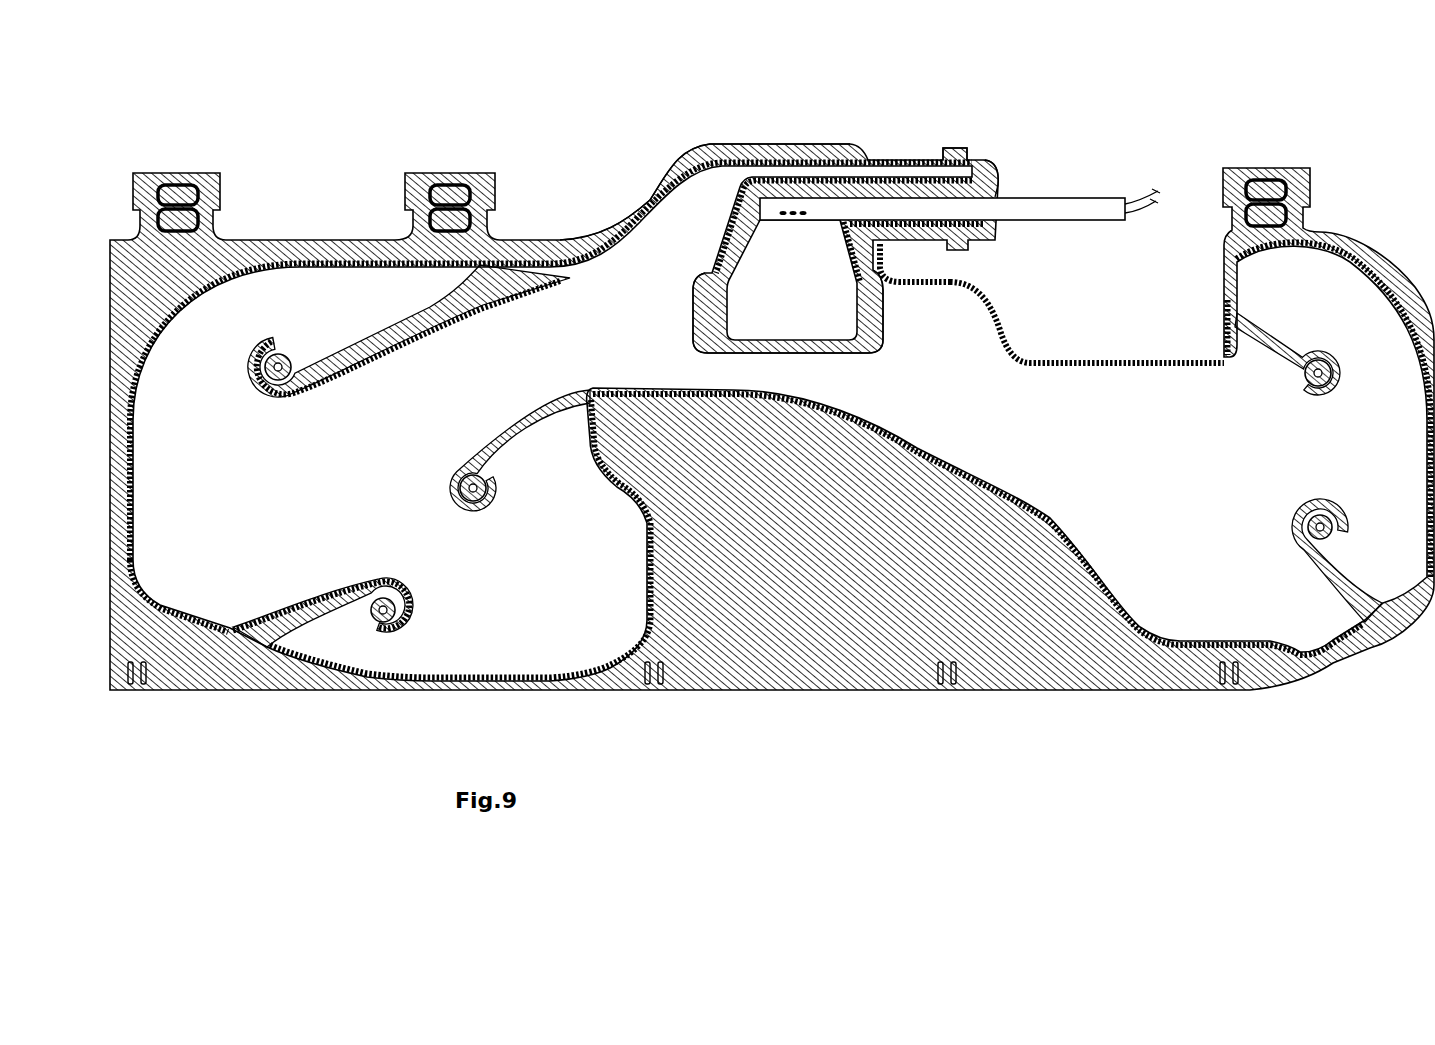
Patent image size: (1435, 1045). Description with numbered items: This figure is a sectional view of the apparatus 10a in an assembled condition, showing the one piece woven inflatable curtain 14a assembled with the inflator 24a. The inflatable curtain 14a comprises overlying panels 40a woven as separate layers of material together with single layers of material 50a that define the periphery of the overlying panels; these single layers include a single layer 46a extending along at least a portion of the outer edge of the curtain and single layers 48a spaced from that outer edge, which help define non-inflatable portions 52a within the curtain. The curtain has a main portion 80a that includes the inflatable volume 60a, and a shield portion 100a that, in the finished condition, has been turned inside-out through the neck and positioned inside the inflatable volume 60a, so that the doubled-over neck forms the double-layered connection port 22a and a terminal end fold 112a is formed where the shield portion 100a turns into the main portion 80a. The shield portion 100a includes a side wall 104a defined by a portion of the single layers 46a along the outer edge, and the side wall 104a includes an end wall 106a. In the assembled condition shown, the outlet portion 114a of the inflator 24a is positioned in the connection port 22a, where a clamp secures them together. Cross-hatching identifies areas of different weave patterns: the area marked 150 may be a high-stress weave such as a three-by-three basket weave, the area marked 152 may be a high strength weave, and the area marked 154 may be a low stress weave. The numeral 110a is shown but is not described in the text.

The apparatus 10a is at (772, 408).
The inflatable curtain 14a is at (1370, 165).
The side wall 104a is at (723, 217).
The outlet portion 114a is at (790, 202).
The terminal end fold 112a is at (990, 187).
The connection port 22a is at (993, 190).
The inflator 24a is at (1047, 210).
The inflatable volume 60a is at (387, 293).
The overlying panels 40a is at (293, 300).
The non-inflatable portions 52a is at (282, 365).
The single layers of material 50a is at (383, 343).
The single layers spaced from the outer edge 48a is at (500, 420).
The high-stress weave pattern cross-hatching 150 is at (663, 220).
The end wall 106a is at (693, 320).
The channel lip 110a is at (773, 353).
The shield portion 100a is at (985, 360).
The high strength weave pattern cross-hatching 152 is at (1000, 480).
The low stress weave pattern cross-hatching 154 is at (838, 660).
The single layer along outer edge 46a is at (1035, 683).
The main portion 80a is at (705, 718).